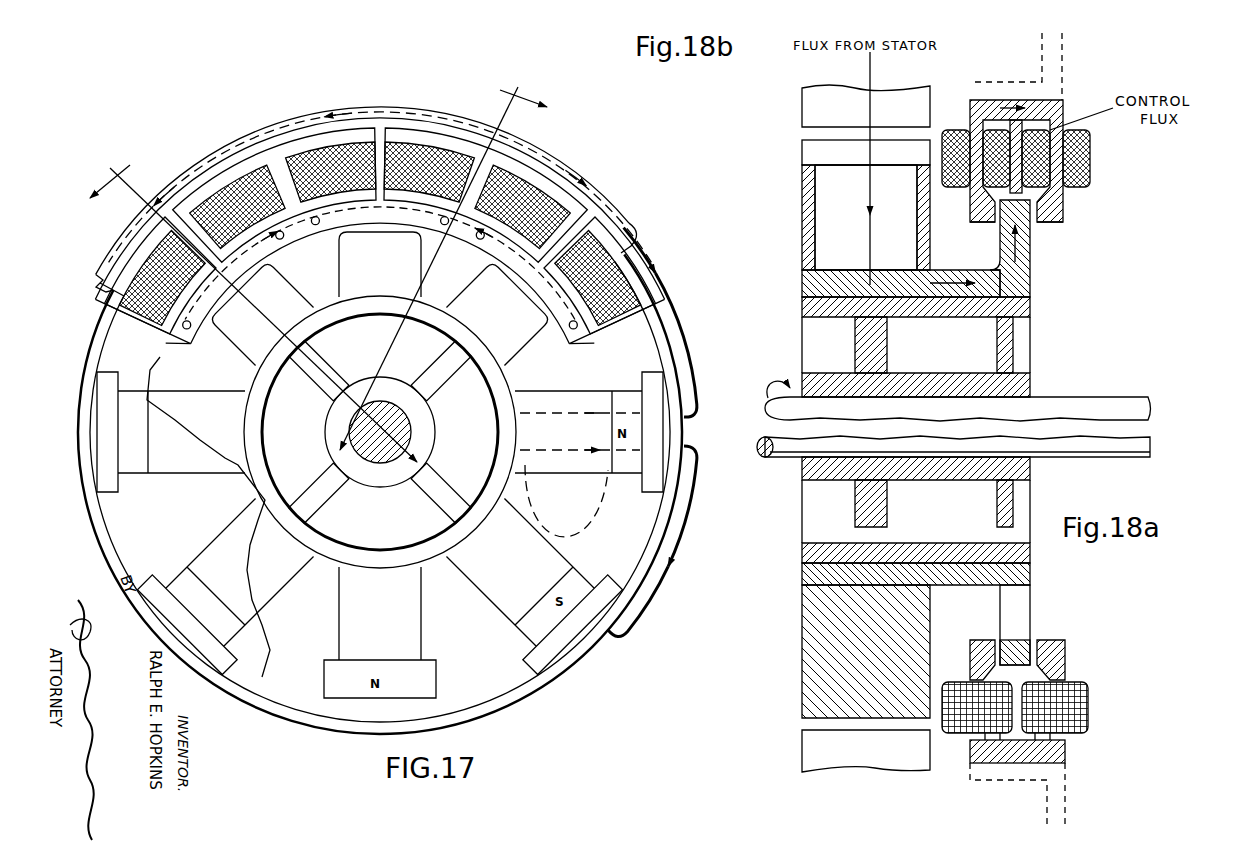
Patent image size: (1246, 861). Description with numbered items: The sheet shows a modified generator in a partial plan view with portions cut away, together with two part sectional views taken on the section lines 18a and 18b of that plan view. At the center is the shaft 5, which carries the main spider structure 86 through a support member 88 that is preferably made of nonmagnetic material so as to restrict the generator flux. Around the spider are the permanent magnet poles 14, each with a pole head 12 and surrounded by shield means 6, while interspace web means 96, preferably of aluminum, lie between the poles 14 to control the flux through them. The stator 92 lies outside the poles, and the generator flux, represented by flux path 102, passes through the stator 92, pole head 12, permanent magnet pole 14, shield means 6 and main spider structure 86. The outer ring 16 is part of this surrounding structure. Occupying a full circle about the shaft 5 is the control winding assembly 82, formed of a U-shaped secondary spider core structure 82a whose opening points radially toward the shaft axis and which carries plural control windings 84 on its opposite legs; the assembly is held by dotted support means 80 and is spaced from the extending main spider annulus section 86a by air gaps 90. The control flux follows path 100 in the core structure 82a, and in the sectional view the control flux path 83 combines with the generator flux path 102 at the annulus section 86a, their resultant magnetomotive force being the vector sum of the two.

In FIG. 17, the shaft 5 is at (412, 423).
In FIG. 18B, the shaft 5 is at (1055, 399).
In FIG. 18A, the shaft 5 is at (1106, 455).
In FIG. 18B, the shield means 6 is at (812, 222).
In FIG. 18B, the pole head 12 is at (822, 153).
In FIG. 18B, the permanent magnet pole 14 is at (832, 188).
In FIG. 17, the frame ring 16 is at (594, 646).
In FIG. 17, the section line 18a— 18a is at (252, 313).
In FIG. 17, the section line 18b— 18b is at (455, 289).
In FIG. 18B, the support means 80 is at (1063, 63).
In FIG. 18A, the support means 80 is at (1066, 784).
In FIG. 17, the control winding assembly 82 is at (576, 168).
In FIG. 18B, the control winding assembly 82 is at (1065, 102).
In FIG. 17, the secondary spider core structure 82a is at (603, 208).
In FIG. 18B, the secondary spider core structure 82a is at (1073, 211).
In FIG. 18A, the secondary spider core structure 82a is at (1066, 660).
In FIG. 18B, the control flux path 83 is at (1040, 200).
In FIG. 18A, the control flux path 83 is at (1067, 677).
In FIG. 17, the control windings 84 is at (523, 190).
In FIG. 18B, the control windings 84 is at (952, 130).
In FIG. 18A, the control windings 84 is at (1090, 712).
In FIG. 17, the main spider structure 86 is at (580, 344).
In FIG. 18B, the main spider structure 86 is at (807, 283).
In FIG. 18A, the main spider structure 86 is at (1034, 582).
In FIG. 18B, the main spider annulus section 86a is at (1032, 266).
In FIG. 18A, the main spider annulus section 86a is at (1033, 625).
In FIG. 17, the support member 88 is at (523, 507).
In FIG. 18B, the support member 88 is at (1035, 351).
In FIG. 18A, the support member 88 is at (822, 497).
In FIG. 18B, the air gaps 90 is at (1038, 210).
In FIG. 18A, the air gaps 90 is at (1040, 650).
In FIG. 17, the stator 92 is at (582, 670).
In FIG. 18B, the stator 92 is at (820, 115).
In FIG. 18A, the stator 92 is at (822, 750).
In FIG. 18A, the interspace web means 96 is at (825, 580).
In FIG. 17, the control flux path 100 is at (309, 123).
In FIG. 17, the generator flux path 102 is at (653, 263).
In FIG. 18B, the generator flux path 102 is at (866, 82).